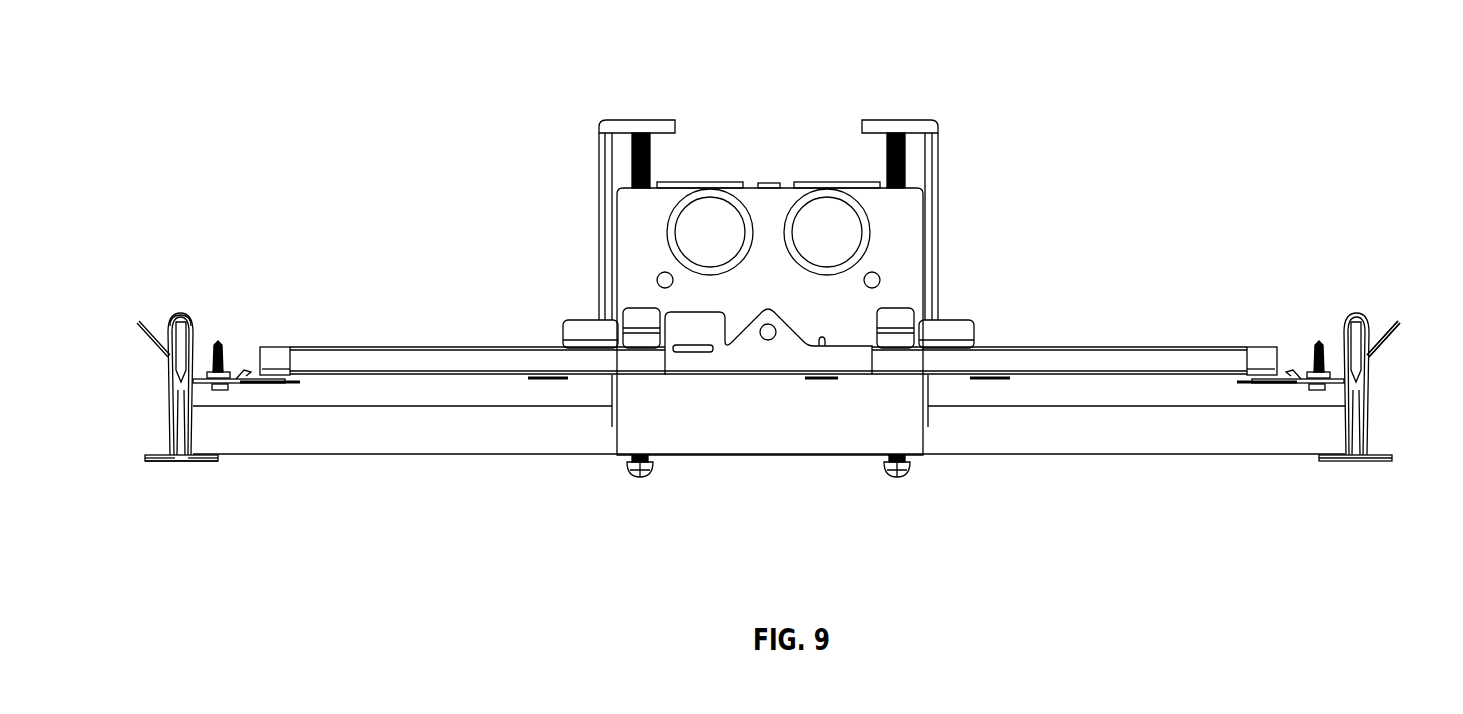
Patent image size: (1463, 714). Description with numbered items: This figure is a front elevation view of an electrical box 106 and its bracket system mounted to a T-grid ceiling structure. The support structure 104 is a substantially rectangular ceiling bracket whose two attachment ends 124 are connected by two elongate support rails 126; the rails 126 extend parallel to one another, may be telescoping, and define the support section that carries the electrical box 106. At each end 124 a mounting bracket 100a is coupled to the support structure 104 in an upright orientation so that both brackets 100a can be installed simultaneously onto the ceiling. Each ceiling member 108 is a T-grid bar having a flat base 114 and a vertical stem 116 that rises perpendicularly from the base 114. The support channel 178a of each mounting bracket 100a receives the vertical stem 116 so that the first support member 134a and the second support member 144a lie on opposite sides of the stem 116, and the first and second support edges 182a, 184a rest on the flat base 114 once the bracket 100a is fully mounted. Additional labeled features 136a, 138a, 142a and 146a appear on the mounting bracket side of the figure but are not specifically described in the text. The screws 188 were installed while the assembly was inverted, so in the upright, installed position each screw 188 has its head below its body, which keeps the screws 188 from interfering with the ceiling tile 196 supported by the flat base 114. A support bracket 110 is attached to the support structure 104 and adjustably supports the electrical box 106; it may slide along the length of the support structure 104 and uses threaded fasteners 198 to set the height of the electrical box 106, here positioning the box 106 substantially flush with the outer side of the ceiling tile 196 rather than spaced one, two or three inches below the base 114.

The mounting bracket 100a is at (170, 318).
The support structure 104 is at (768, 325).
The electrical box 106 is at (770, 200).
The ceiling member 108 is at (178, 462).
The support bracket 110 is at (823, 357).
The flat base 114 is at (183, 462).
The vertical stem 116 is at (180, 415).
The attachment end 124 is at (272, 388).
The elongate support rail 126 is at (440, 360).
The first support member 134a is at (175, 385).
The clip top end 136a is at (180, 313).
The clip spring prong 138a is at (1368, 318).
The retaining tab 142a is at (243, 376).
The second support member 144a is at (196, 398).
The attachment bracket 146a is at (252, 386).
The support channel 178a is at (1365, 482).
The first support edge 182a is at (166, 456).
The second support edge 184a is at (198, 458).
The screw 188 is at (222, 362).
The ceiling tile 196 is at (1075, 440).
The threaded fastener 198 is at (655, 152).